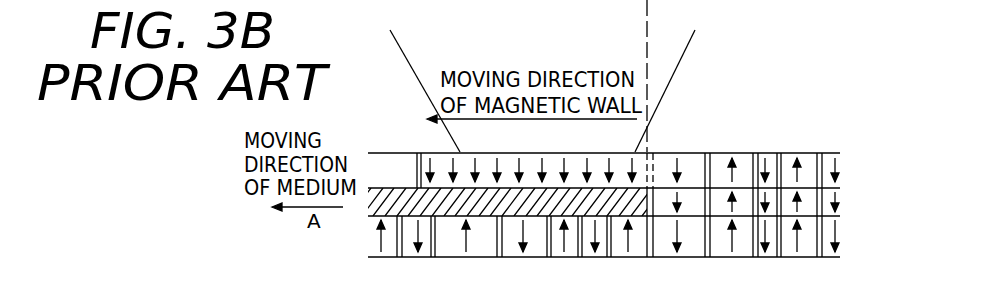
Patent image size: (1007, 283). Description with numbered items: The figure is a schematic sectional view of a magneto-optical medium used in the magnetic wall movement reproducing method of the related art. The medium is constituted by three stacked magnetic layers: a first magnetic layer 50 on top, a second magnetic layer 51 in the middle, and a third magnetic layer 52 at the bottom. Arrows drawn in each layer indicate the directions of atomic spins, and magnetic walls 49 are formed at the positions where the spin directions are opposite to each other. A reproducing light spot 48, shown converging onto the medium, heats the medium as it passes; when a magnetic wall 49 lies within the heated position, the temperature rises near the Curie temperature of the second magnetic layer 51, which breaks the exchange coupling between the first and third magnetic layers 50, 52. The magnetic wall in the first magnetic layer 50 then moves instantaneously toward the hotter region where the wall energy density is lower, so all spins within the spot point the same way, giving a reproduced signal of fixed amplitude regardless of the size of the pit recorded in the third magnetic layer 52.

The reproducing light spot 48 is at (687, 47).
The magnetic wall 49 is at (650, 152).
The first magnetic layer 50 is at (846, 163).
The second magnetic layer 51 is at (846, 195).
The third magnetic layer 52 is at (846, 228).